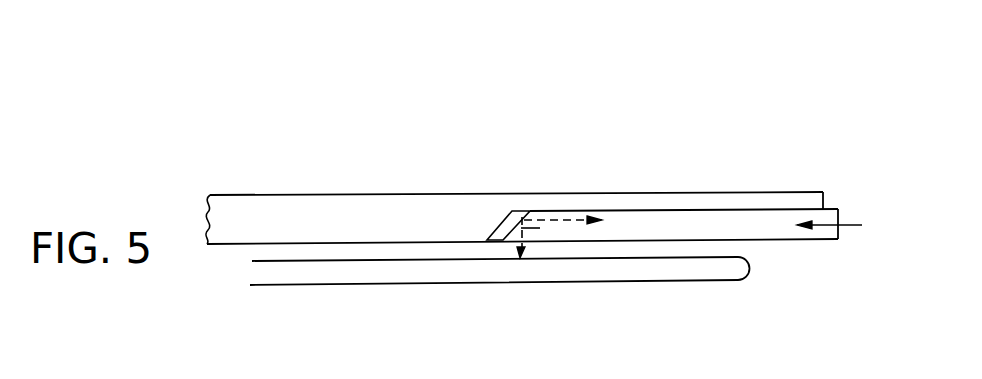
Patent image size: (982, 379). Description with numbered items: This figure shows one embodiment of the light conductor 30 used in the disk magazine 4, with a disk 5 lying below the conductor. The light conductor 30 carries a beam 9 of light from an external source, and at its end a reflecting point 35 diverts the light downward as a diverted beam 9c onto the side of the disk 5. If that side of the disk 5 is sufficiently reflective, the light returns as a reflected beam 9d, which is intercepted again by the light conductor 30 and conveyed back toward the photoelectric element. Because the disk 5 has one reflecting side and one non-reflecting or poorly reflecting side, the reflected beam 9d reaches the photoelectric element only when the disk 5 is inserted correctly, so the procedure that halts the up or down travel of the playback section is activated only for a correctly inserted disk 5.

The magazine 4 is at (253, 211).
The disk 5 is at (390, 275).
The beam of light 9 is at (845, 222).
The diverted beam 9c is at (493, 240).
The reflected beam 9d is at (568, 219).
The light conductor 30 is at (673, 228).
The reflecting point 35 is at (512, 253).